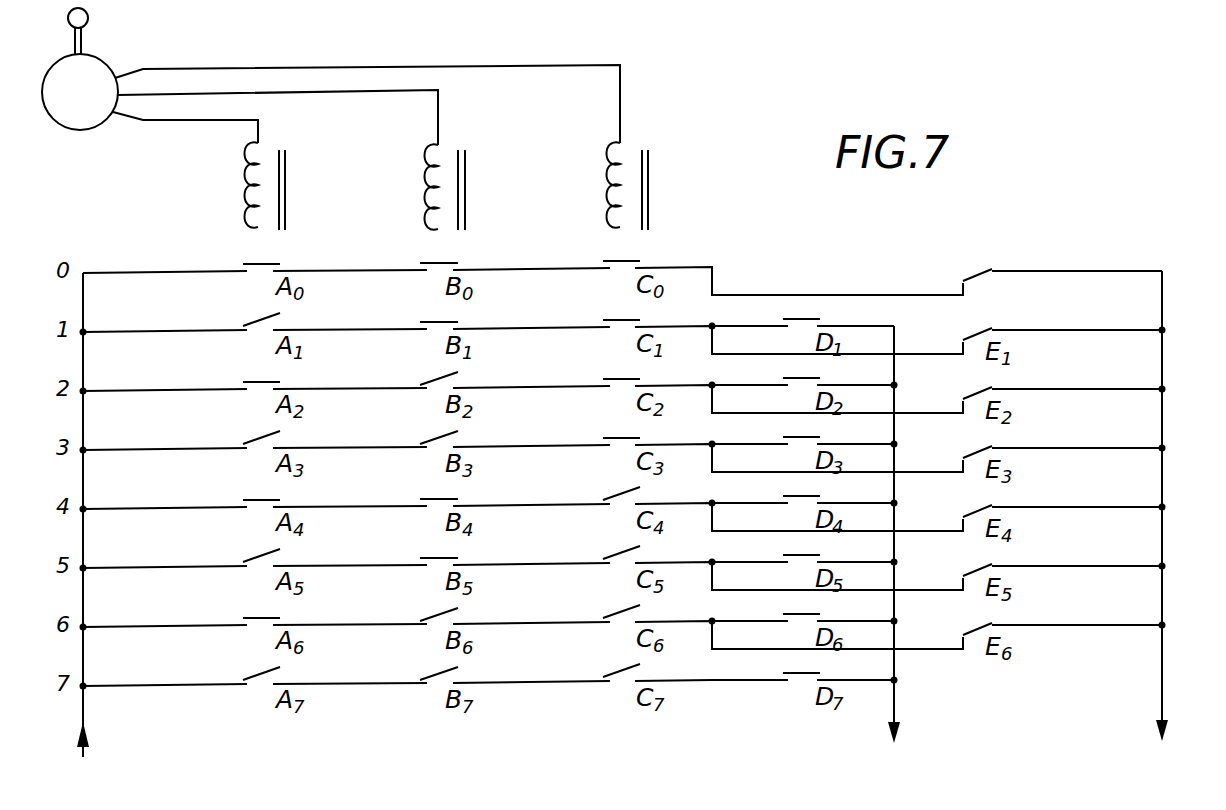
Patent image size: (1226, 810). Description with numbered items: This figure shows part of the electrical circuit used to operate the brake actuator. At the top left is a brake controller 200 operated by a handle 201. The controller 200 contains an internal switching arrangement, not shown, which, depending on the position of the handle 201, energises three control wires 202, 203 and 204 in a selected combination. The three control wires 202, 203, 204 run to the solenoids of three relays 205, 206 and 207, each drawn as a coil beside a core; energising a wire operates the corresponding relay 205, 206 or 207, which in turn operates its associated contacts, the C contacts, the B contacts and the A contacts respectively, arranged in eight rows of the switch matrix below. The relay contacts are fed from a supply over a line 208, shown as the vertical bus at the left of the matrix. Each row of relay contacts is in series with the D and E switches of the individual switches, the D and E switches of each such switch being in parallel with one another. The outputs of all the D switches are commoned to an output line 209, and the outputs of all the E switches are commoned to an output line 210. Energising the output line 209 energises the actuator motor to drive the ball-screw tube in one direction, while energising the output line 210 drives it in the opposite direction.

The brake controller 200 is at (63, 133).
The handle 201 is at (85, 42).
The control wire 202 is at (400, 63).
The control wire 203 is at (413, 93).
The control wire 204 is at (187, 122).
The relay 205 is at (603, 248).
The relay 206 is at (418, 248).
The relay 207 is at (238, 248).
The supply line 208 is at (82, 708).
The output line 209 is at (894, 705).
The output line 210 is at (1164, 700).